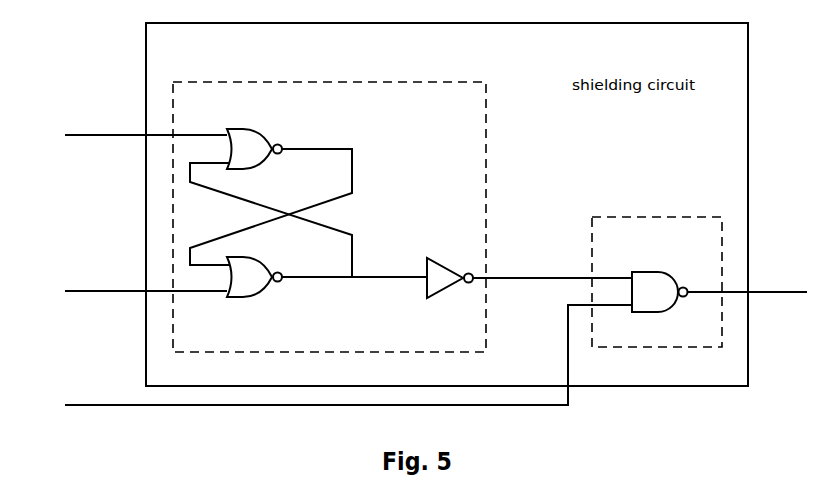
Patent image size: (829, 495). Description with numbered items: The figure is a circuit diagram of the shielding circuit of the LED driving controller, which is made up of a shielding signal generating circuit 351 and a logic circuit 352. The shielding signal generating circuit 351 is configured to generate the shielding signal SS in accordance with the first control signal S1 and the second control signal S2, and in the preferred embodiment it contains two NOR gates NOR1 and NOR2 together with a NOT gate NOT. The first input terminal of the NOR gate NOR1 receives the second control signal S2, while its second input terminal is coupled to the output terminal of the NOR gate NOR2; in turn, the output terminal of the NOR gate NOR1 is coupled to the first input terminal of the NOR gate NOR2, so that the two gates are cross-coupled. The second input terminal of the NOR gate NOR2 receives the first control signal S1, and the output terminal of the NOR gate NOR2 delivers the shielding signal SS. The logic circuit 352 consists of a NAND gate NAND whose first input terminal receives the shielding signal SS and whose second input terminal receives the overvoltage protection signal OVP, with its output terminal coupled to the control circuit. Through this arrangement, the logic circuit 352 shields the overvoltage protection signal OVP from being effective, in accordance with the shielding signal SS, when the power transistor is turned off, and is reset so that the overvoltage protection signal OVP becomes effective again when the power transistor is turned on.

The shielding signal generating circuit 351 is at (347, 82).
The logic circuit 352 is at (642, 217).
The NOR gate NOR1 is at (254, 133).
The NOR gate NOR2 is at (259, 293).
The NOT gate NOT is at (447, 267).
The NAND gate NAND is at (656, 306).
The first control signal S1 is at (132, 291).
The second control signal S2 is at (132, 135).
The shielding signal SS is at (552, 266).
The overvoltage protection signal OVP is at (323, 360).